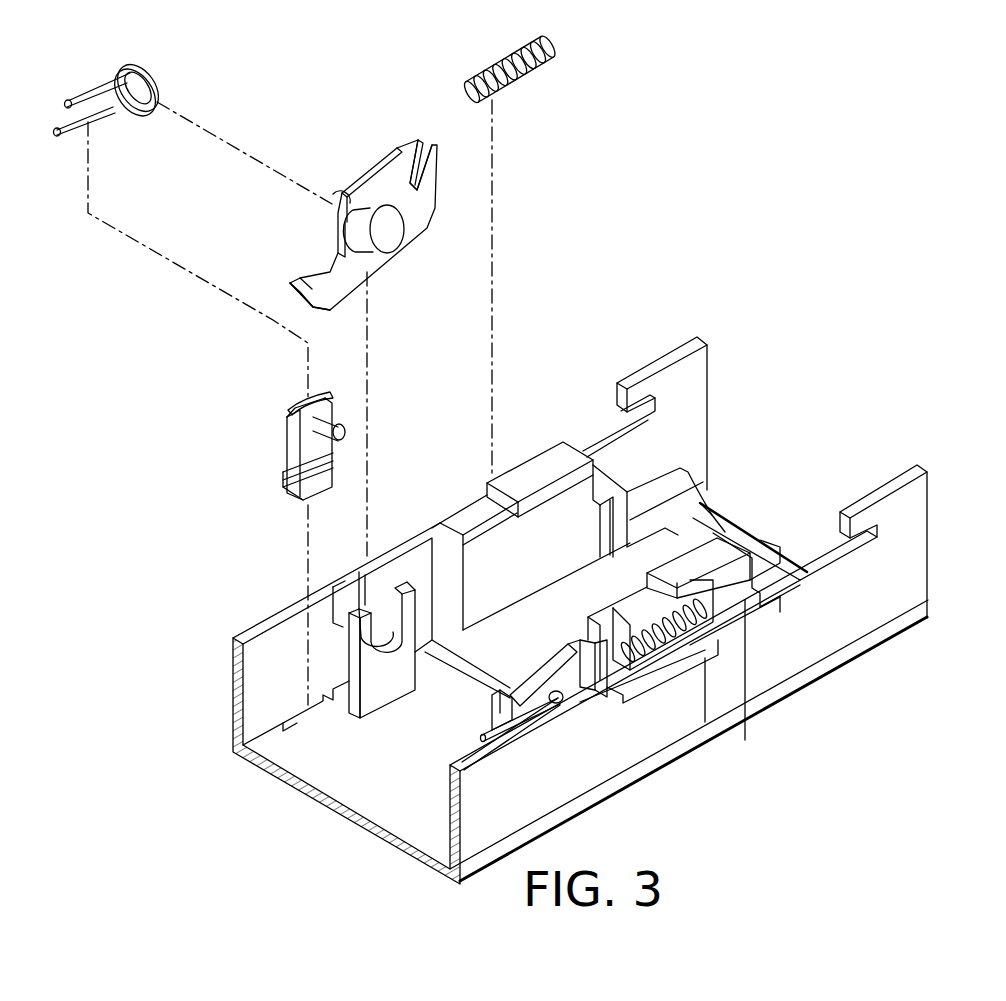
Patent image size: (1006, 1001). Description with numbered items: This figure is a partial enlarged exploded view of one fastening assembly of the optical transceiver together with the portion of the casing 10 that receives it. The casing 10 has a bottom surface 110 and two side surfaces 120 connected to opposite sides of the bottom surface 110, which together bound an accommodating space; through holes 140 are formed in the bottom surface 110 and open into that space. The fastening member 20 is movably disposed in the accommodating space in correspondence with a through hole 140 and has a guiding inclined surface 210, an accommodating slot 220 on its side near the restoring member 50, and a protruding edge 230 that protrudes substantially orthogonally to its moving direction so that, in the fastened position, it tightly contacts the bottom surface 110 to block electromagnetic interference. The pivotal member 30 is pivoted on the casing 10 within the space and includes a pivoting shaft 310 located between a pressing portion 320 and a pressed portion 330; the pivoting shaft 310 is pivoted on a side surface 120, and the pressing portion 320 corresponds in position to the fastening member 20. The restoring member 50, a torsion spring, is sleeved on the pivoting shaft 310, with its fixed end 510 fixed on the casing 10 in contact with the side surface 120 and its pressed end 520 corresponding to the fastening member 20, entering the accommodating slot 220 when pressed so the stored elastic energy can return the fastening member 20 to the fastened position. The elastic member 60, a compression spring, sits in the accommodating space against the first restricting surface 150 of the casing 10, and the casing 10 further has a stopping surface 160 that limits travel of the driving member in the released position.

The casing 10 is at (205, 631).
The bottom surface 110 is at (352, 783).
The side surfaces 120 is at (263, 682).
The through holes 140 is at (297, 705).
The first restricting surfaces 150 is at (700, 622).
The stopping surface 160 is at (770, 636).
The fastening member 20 is at (278, 445).
The guiding inclined surface 210 is at (303, 500).
The accommodating slot 220 is at (297, 397).
The protruding edge 230 is at (332, 457).
The pivotal member 30 is at (362, 137).
The pivoting shaft 310 is at (392, 237).
The pressing portion 320 is at (305, 288).
The pressed portion 330 is at (431, 162).
The restoring member 50 is at (172, 60).
The fixed end 510 is at (88, 87).
The pressed end 520 is at (59, 132).
The elastic member 60 is at (700, 626).